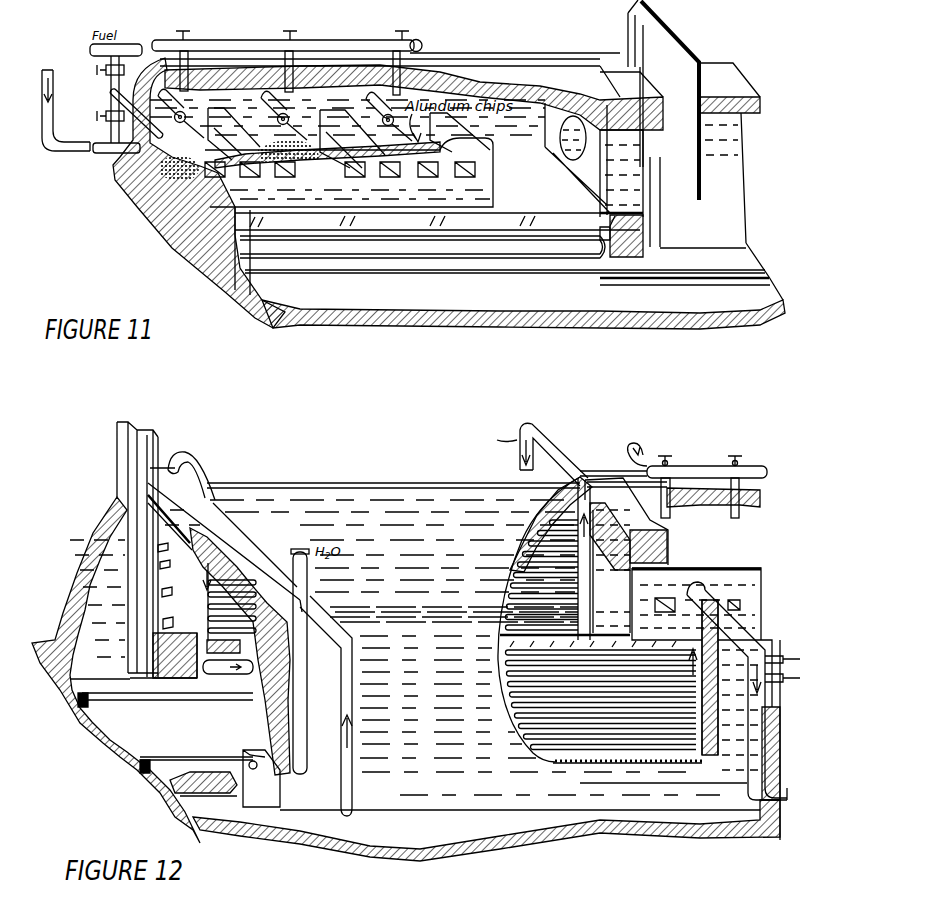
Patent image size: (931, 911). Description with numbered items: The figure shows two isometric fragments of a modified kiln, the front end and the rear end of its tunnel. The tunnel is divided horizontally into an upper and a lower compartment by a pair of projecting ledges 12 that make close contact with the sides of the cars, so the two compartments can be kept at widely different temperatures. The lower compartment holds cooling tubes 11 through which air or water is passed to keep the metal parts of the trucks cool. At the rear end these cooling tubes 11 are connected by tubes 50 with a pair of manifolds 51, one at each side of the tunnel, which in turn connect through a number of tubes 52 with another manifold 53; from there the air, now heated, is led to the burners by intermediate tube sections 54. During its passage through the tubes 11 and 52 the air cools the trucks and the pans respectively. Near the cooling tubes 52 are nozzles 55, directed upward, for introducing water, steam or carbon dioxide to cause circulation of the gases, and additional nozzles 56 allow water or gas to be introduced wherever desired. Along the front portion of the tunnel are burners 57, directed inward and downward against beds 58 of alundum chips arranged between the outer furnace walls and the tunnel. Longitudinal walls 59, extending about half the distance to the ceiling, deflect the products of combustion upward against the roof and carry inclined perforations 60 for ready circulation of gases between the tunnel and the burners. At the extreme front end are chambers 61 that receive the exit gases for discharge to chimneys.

In FIG. 11, the cooling tubes 11 is at (272, 228).
In FIG. 11, the projecting ledges 12 is at (545, 226).
In FIG. 12, the projecting ledges 12 is at (608, 619).
In FIG. 12, the tubes 50 is at (184, 468).
In FIG. 12, the manifolds 51 is at (205, 596).
In FIG. 12, the tubes 52 is at (602, 635).
In FIG. 12, the manifold 53 is at (583, 607).
In FIG. 11, the intermediate tube sections 54 is at (52, 160).
In FIG. 12, the intermediate tube sections 54 is at (562, 456).
In FIG. 12, the nozzles 55 is at (200, 600).
In FIG. 11, the additional nozzles 56 is at (188, 98).
In FIG. 12, the additional nozzles 56 is at (738, 510).
In FIG. 11, the burners 57 is at (112, 92).
In FIG. 11, the beds of alundum chips 58 is at (131, 206).
In FIG. 11, the longitudinal walls 59 is at (497, 187).
In FIG. 12, the longitudinal walls 59 is at (767, 610).
In FIG. 11, the inclined perforations 60 is at (435, 173).
In FIG. 12, the inclined perforations 60 is at (682, 601).
In FIG. 11, the chambers 61 is at (577, 157).